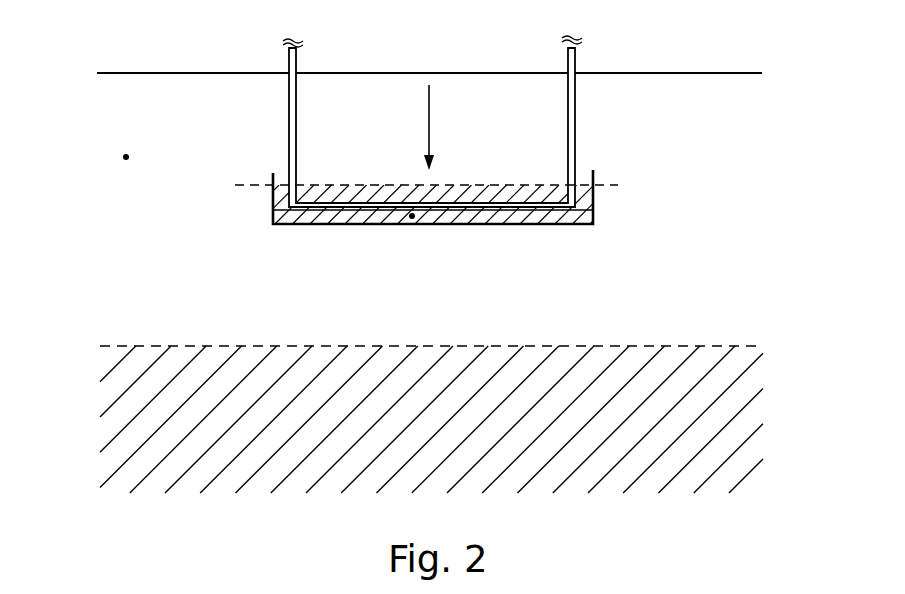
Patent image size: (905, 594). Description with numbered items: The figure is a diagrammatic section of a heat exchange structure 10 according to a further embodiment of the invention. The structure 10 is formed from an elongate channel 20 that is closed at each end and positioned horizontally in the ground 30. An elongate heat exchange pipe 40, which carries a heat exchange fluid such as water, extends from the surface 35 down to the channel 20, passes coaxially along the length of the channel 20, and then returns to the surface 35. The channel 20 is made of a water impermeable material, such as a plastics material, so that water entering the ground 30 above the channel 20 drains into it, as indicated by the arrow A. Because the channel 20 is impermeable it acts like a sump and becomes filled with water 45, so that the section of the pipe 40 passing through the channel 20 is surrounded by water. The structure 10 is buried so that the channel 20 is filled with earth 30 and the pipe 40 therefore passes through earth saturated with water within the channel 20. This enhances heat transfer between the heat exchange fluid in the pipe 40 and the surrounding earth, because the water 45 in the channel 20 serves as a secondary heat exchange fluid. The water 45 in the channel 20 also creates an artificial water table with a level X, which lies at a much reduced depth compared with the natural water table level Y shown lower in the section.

The heat exchange structure 10 is at (226, 222).
The elongate channel 20 is at (557, 225).
The ground 30 is at (124, 157).
The surface 35 is at (193, 72).
The heat exchange pipe 40 is at (288, 140).
The water 45 is at (412, 218).
The arrow A is at (419, 127).
The artificial water table level X is at (611, 183).
The natural water table level Y is at (150, 346).